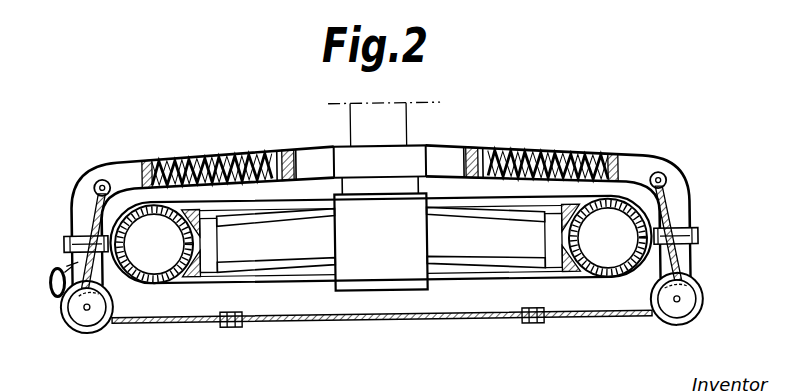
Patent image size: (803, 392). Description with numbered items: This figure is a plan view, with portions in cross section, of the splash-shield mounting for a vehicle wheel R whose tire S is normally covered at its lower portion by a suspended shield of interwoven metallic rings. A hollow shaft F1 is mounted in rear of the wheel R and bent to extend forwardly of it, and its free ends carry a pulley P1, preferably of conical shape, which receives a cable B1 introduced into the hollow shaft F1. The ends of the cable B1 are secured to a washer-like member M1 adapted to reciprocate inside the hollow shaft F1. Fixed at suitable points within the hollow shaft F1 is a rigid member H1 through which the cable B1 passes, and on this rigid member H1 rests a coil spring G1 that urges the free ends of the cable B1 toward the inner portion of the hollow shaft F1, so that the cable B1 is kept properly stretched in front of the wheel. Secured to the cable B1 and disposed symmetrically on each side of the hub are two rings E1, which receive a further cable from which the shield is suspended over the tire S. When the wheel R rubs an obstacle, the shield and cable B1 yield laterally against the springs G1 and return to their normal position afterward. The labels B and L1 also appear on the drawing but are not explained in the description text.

The housing / frame body B is at (360, 322).
The vehicle wheel R is at (280, 239).
The cable B1 is at (230, 155).
The rigid member H1 is at (138, 160).
The coil spring G1 is at (193, 157).
The hollow shaft F1 is at (317, 165).
The washer-like member M1 is at (480, 114).
The pulley L1 is at (100, 173).
The pulley P1 is at (93, 318).
The tire S is at (143, 318).
The ring E1 is at (230, 322).